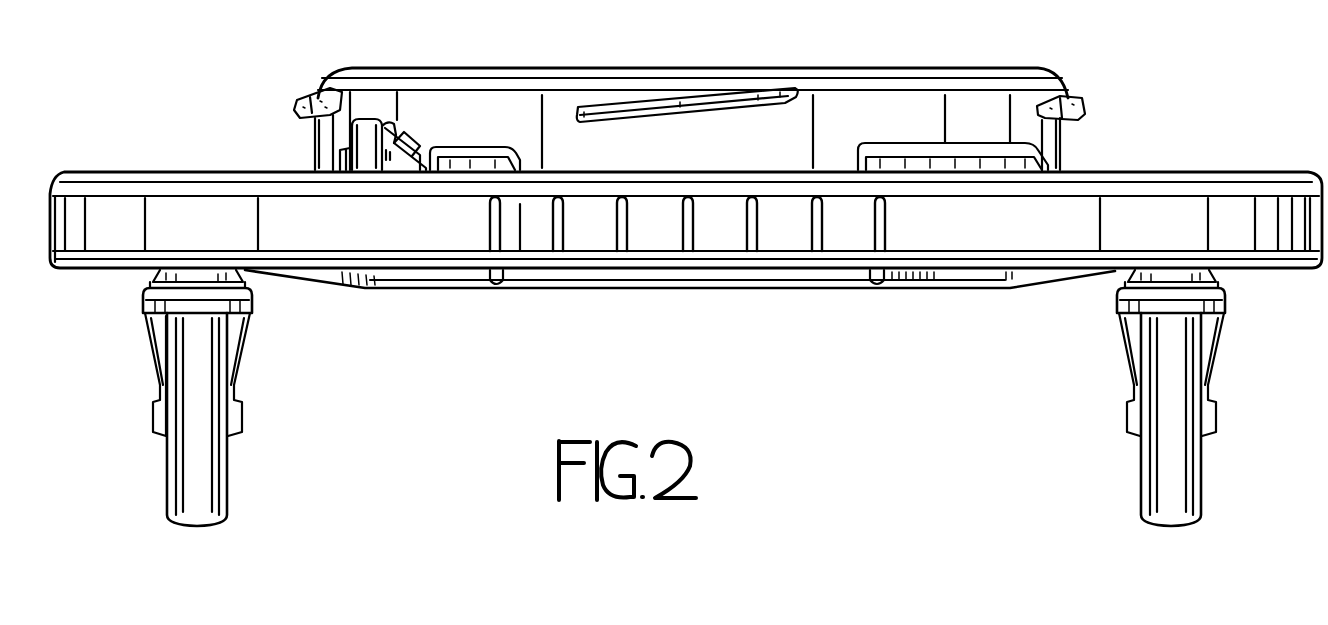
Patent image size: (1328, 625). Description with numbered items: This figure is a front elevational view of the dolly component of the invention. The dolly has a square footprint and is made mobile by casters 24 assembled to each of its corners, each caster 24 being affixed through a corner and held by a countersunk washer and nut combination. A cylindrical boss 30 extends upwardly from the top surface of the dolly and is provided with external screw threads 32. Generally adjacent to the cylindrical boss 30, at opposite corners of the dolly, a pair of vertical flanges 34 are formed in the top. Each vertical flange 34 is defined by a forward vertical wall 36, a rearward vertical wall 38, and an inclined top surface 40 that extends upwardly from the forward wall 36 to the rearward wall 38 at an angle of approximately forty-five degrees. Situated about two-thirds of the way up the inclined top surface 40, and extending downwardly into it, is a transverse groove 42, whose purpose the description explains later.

The caster 24 is at (231, 491).
The cylindrical boss 30 is at (873, 111).
The external screw threads 32 is at (302, 98).
The vertical flange 34 is at (412, 140).
The forward vertical wall 36 is at (430, 148).
The rearward vertical wall 38 is at (352, 132).
The inclined top surface 40 is at (405, 140).
The transverse groove 42 is at (388, 122).